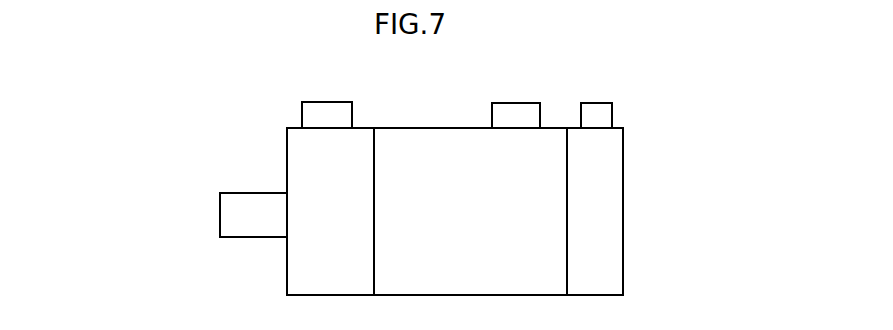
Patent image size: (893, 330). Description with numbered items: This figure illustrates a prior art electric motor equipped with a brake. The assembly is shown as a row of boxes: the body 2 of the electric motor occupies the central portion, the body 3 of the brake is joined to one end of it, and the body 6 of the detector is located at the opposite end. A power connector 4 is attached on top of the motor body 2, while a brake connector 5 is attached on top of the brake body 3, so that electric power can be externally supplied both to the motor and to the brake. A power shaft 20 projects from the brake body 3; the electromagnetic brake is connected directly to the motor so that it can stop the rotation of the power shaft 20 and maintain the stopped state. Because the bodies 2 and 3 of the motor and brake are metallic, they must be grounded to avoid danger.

The body of the electric motor 2 is at (433, 116).
The body of the brake 3 is at (276, 135).
The power connector 4 is at (525, 88).
The brake connector 5 is at (328, 88).
The body of the detector 6 is at (634, 162).
The power shaft 20 is at (205, 187).